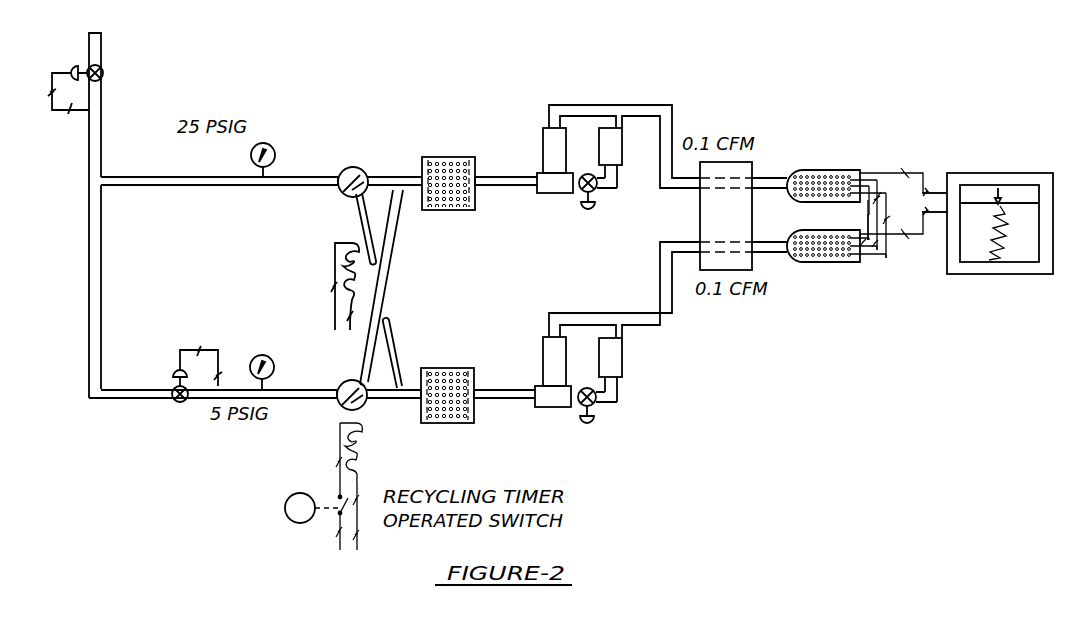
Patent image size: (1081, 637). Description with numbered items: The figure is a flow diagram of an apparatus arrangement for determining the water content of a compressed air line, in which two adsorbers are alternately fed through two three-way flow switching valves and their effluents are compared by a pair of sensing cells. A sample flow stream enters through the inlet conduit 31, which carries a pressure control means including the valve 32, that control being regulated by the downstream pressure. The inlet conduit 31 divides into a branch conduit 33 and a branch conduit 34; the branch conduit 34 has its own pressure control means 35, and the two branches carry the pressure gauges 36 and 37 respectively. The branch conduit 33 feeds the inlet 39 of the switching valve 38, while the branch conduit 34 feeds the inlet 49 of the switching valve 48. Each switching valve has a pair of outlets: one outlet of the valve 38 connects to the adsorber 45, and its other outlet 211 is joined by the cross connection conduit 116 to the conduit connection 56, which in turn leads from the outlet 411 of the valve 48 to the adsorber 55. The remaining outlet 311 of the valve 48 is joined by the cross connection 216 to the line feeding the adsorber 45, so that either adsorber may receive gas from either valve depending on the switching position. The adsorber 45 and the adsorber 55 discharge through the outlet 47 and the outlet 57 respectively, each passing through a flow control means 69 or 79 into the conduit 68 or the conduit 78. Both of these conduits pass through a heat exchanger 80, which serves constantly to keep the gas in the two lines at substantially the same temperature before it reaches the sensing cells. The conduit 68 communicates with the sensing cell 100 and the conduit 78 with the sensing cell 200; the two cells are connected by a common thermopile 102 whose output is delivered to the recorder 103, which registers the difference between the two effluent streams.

The sample flow stream inlet conduit 31 is at (101, 45).
The valve 32 is at (76, 66).
The branch conduit 33 is at (163, 178).
The branch conduit 34 is at (151, 387).
The pressure control means 35 is at (173, 362).
The pressure gauge 36 is at (270, 146).
The pressure gauge 37 is at (261, 356).
The switching valve 38 is at (354, 167).
The inlet 39 is at (340, 170).
The adsorber 45 is at (440, 144).
The outlet 47 is at (477, 178).
The switching valve 48 is at (365, 406).
The inlet 49 is at (339, 405).
The adsorber 55 is at (443, 368).
The conduit connection 56 is at (430, 362).
The outlet 57 is at (476, 386).
The conduit 68 is at (574, 92).
The flow control means 69 is at (553, 195).
The conduit 78 is at (574, 302).
The flow control means 79 is at (560, 408).
The heat exchanger 80 is at (754, 166).
The sensing cell 100 is at (815, 157).
The common thermopile 102 is at (868, 217).
The recorder 103 is at (999, 163).
The sensing cell 200 is at (812, 265).
The outlet 211 is at (349, 229).
The cross connection conduit 116 is at (357, 233).
The cross connection 216 is at (398, 212).
The outlet 311 is at (356, 384).
The outlet 411 is at (386, 353).